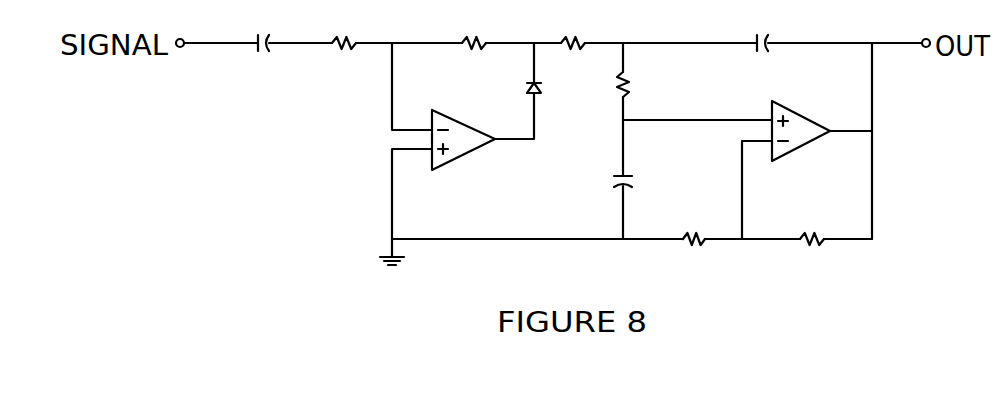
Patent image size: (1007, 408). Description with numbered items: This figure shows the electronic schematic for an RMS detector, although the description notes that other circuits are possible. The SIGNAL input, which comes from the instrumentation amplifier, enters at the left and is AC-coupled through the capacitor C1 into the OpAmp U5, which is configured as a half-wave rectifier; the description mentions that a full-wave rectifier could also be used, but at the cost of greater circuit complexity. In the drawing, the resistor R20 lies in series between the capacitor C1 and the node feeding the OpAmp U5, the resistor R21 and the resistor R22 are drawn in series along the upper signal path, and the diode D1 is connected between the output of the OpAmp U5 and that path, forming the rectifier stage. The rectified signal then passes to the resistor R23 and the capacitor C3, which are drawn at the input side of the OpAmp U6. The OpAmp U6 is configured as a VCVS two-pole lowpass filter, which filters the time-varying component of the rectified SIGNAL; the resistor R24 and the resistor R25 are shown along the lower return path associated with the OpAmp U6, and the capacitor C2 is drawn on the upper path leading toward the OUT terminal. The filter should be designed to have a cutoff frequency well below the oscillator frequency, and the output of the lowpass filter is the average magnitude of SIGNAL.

The capacitor C1 is at (256, 25).
The input resistor R20 is at (345, 24).
The feedback resistor R21 is at (475, 24).
The series resistor R22 is at (577, 24).
The rectifier diode D1 is at (553, 90).
The OpAmp U5 is at (463, 128).
The resistor R23 is at (656, 85).
The output coupling capacitor C2 is at (765, 27).
The OpAmp U6 is at (802, 121).
The filter capacitor C3 is at (599, 183).
The gain-setting resistor R24 is at (686, 223).
The feedback resistor R25 is at (814, 223).